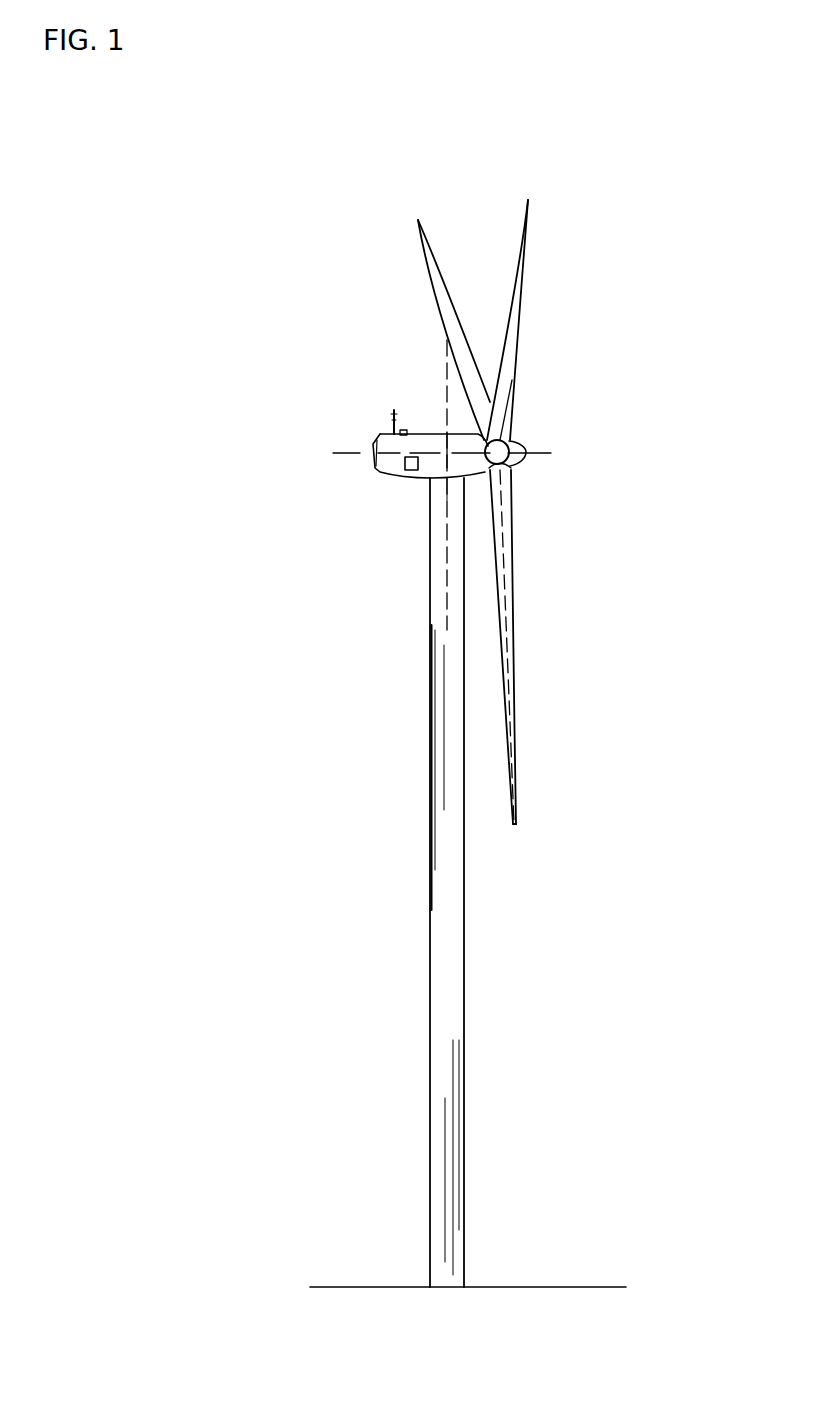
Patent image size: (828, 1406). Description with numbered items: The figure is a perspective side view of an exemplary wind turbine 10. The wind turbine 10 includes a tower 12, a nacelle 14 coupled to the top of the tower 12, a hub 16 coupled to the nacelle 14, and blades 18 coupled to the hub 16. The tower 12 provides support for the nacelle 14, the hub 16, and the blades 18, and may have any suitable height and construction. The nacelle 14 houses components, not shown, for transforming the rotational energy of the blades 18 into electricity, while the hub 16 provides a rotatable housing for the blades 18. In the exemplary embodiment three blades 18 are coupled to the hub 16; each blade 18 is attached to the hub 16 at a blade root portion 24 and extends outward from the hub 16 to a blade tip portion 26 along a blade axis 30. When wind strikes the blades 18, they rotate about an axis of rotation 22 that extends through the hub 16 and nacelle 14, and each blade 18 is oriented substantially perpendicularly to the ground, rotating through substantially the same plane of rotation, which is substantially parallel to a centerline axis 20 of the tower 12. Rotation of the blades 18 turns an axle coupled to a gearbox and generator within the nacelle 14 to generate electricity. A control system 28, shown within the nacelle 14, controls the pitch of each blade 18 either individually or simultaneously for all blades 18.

The wind turbine 10 is at (170, 232).
The tower 12 is at (429, 1048).
The nacelle 14 is at (400, 478).
The hub 16 is at (522, 443).
The blade 18 is at (556, 646).
The centerline axis 20 is at (445, 362).
The axis of rotation 22 is at (545, 455).
The blade root portion 24 is at (512, 517).
The blade tip portion 26 is at (517, 824).
The control system 28 is at (415, 480).
The blade axis 30 is at (504, 583).